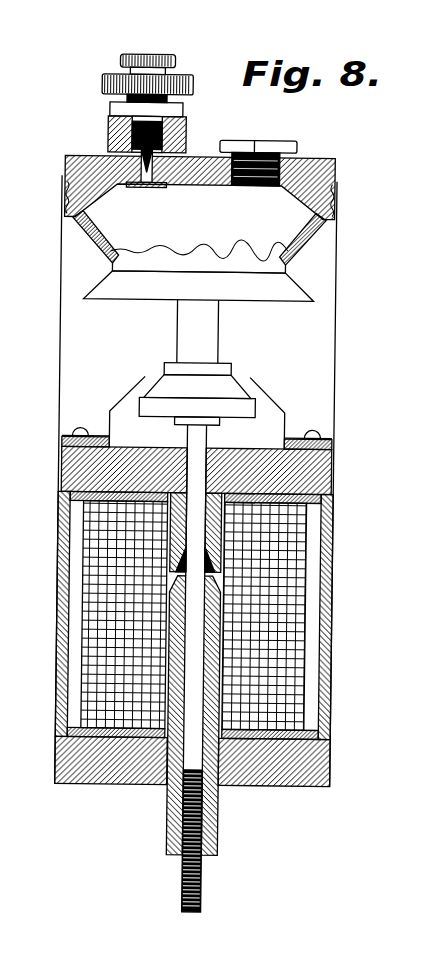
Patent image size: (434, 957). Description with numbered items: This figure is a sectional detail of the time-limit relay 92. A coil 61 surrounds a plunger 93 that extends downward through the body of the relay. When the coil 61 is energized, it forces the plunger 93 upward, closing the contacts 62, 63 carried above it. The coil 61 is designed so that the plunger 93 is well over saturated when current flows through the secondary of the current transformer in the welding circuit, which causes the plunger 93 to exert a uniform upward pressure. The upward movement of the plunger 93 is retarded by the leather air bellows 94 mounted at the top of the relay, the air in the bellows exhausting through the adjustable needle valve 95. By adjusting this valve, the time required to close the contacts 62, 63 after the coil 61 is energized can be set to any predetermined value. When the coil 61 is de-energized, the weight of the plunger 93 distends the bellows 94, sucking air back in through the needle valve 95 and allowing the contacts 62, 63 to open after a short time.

The adjustable needle valve 95 is at (186, 116).
The leather air bellows 94 is at (304, 255).
The contact 63 is at (143, 378).
The contact 62 is at (262, 383).
The time-limit relay 92 is at (42, 345).
The coil 61 is at (288, 619).
The plunger 93 is at (222, 815).